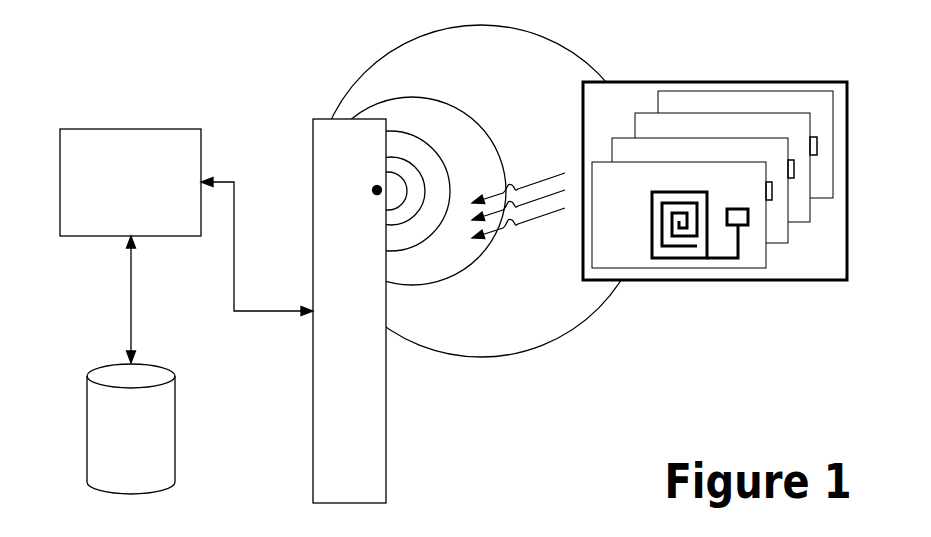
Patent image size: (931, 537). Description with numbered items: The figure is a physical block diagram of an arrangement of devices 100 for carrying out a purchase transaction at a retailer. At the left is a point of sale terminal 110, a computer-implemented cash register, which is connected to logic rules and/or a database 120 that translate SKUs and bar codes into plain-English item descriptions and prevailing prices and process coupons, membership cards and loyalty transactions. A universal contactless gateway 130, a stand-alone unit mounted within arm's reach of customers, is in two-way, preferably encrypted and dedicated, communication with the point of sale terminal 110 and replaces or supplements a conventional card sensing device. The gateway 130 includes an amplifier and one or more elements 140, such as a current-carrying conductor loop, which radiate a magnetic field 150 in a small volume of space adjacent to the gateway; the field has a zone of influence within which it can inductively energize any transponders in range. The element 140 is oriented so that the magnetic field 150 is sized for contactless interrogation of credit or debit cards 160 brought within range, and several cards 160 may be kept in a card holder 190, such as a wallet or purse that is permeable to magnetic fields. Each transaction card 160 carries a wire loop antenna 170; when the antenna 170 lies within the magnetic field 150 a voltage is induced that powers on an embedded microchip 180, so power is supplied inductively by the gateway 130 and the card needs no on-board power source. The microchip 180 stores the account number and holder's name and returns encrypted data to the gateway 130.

The arrangement of devices 100 is at (596, 446).
The point of sale terminal 110 is at (147, 206).
The database 120 is at (114, 458).
The universal contactless gateway 130 is at (335, 437).
The element 140 is at (358, 182).
The magnetic field 150 is at (464, 84).
The transaction card 160 is at (632, 266).
The wire loop antenna 170 is at (715, 233).
The microchip 180 is at (750, 232).
The card holder 190 is at (805, 274).